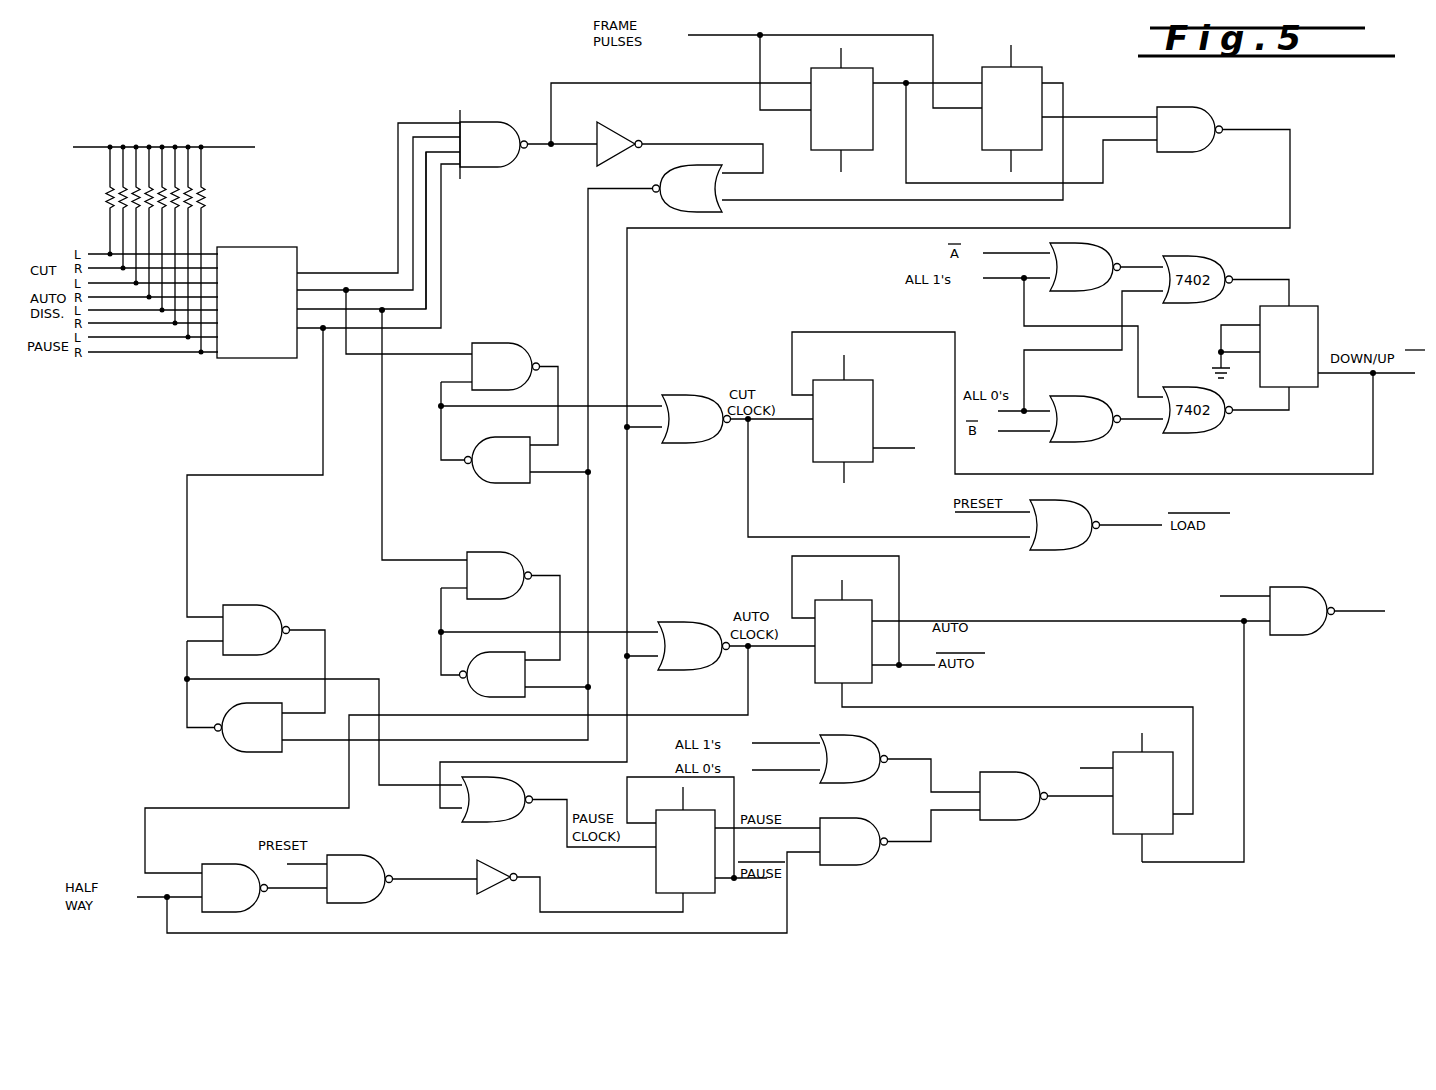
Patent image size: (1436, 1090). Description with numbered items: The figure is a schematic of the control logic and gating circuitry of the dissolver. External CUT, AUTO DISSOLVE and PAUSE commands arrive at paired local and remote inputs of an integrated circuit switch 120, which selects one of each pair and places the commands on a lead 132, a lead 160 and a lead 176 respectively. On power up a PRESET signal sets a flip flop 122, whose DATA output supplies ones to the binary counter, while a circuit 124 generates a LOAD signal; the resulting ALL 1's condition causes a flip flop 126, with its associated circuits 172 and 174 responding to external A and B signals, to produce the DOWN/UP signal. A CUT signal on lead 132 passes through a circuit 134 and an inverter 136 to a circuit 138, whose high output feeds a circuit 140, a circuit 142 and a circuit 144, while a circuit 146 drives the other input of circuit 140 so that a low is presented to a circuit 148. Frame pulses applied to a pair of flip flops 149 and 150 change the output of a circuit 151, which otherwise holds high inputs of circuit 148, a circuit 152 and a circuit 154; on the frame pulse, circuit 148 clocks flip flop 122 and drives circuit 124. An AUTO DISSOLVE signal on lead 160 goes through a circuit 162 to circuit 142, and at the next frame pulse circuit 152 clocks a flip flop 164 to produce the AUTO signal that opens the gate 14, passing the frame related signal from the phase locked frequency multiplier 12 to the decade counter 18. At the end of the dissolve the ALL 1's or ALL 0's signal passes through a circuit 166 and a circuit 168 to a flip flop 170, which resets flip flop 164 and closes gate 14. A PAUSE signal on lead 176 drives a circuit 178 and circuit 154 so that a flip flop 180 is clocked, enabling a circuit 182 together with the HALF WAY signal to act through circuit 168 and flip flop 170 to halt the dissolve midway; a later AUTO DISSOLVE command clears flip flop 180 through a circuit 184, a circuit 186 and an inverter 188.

The phase locked frequency multiplier 12 is at (1215, 609).
The gate 14 is at (1297, 587).
The decade counter 18 is at (1350, 674).
The integrated circuit switch 120 is at (243, 358).
The flip flop 122 is at (866, 403).
The circuit 124 is at (1066, 506).
The flip flop 126 is at (1318, 320).
The lead 132 is at (359, 288).
The circuit 134 is at (493, 120).
The inverter 136 is at (608, 124).
The circuit 138 is at (678, 170).
The circuit 140 is at (497, 478).
The circuit 142 is at (472, 690).
The circuit 144 is at (238, 752).
The circuit 146 is at (517, 340).
The circuit 148 is at (684, 397).
The flip flop 149 is at (811, 131).
The flip flop 150 is at (982, 137).
The circuit 151 is at (1190, 98).
The circuit 152 is at (675, 624).
The circuit 154 is at (493, 820).
The lead 160 is at (426, 288).
The circuit 162 is at (505, 543).
The flip flop 164 is at (811, 672).
The circuit 166 is at (858, 745).
The circuit 168 is at (1003, 772).
The flip flop 170 is at (1113, 832).
The circuit 172 is at (1098, 252).
The circuit 174 is at (1097, 438).
The lead 176 is at (440, 314).
The circuit 178 is at (255, 604).
The flip flop 180 is at (656, 878).
The circuit 182 is at (858, 860).
The circuit 184 is at (218, 863).
The circuit 186 is at (371, 856).
The inverter 188 is at (474, 862).